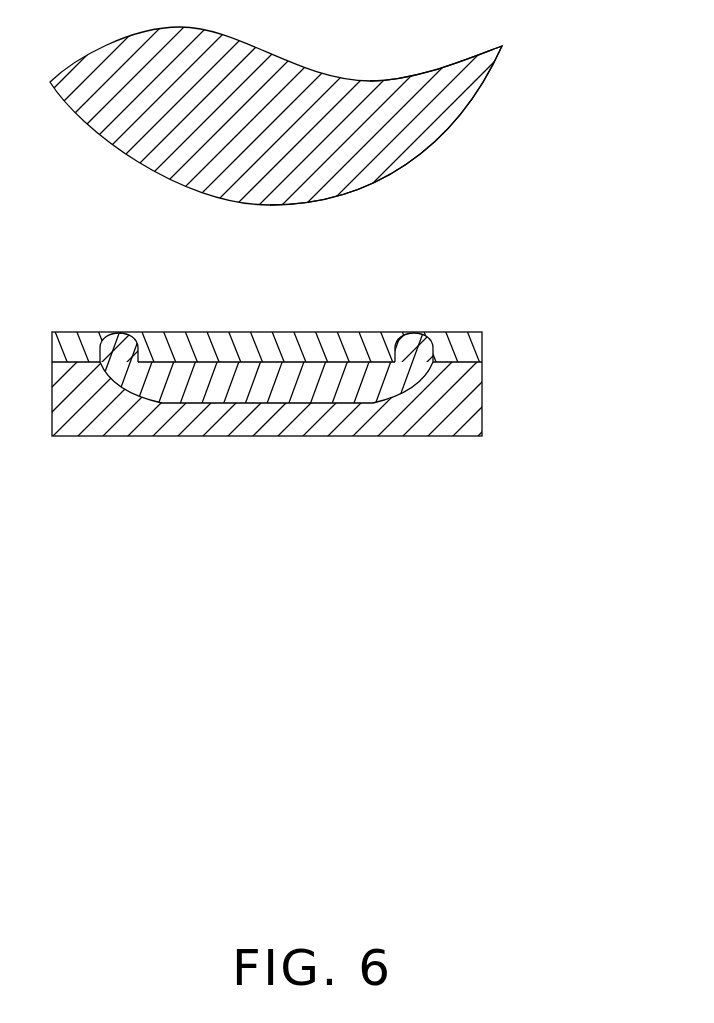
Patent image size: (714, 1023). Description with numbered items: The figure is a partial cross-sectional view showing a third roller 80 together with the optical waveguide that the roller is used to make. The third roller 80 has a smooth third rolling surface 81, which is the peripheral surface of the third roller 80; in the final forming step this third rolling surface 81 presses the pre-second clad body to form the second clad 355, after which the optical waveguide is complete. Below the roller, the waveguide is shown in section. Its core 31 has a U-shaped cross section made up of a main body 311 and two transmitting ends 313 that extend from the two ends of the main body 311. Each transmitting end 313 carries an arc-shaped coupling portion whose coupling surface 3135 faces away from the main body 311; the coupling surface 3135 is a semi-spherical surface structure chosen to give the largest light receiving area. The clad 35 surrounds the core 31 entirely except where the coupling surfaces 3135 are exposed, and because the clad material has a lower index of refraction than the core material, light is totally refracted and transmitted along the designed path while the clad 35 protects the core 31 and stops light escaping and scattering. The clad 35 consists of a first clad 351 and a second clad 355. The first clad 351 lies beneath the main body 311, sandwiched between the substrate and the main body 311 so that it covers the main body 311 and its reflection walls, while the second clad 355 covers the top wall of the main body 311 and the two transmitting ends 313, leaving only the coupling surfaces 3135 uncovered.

The third roller 80 is at (432, 117).
The third rolling surface 81 is at (408, 162).
The core 31 is at (393, 290).
The main body 311 is at (271, 380).
The transmitting end 313 is at (407, 352).
The coupling surface 3135 is at (118, 333).
The clad 35 is at (578, 310).
The second clad 355 is at (463, 340).
The first clad 351 is at (457, 429).